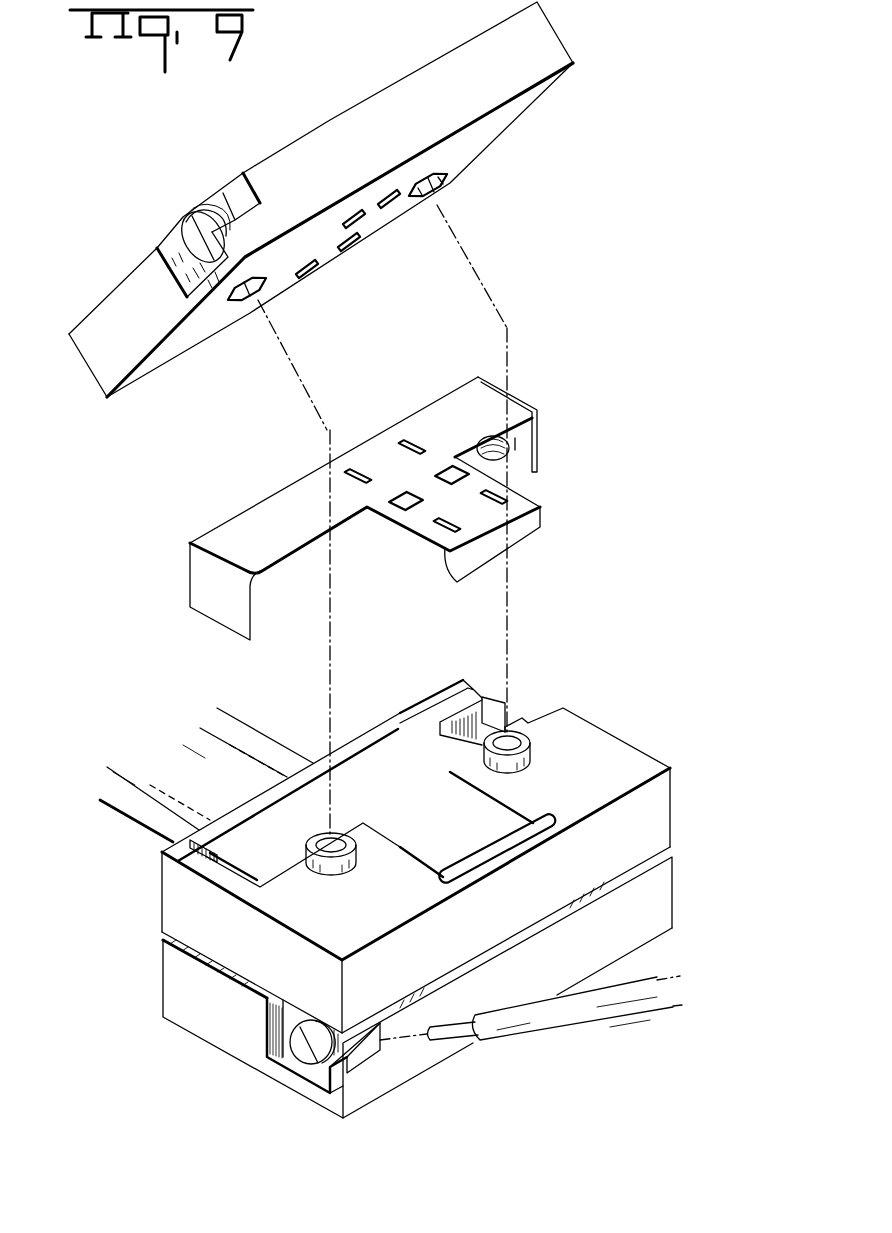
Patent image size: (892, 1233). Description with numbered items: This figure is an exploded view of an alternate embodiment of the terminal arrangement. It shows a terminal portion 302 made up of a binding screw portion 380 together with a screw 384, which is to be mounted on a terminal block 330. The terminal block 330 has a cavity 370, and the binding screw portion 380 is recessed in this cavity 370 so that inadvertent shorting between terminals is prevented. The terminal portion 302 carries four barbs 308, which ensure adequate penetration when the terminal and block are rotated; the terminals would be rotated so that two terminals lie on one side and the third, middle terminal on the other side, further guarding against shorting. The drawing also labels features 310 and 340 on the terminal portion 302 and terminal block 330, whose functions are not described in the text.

The terminal block 330 is at (537, 121).
The screw 384 is at (190, 230).
The terminal portion 302 is at (540, 392).
The binding screw portion 380 is at (548, 449).
The barbs 308 is at (409, 441).
The aperture 310 is at (448, 481).
The cavity 340 is at (391, 782).
The cavity 370 is at (540, 707).